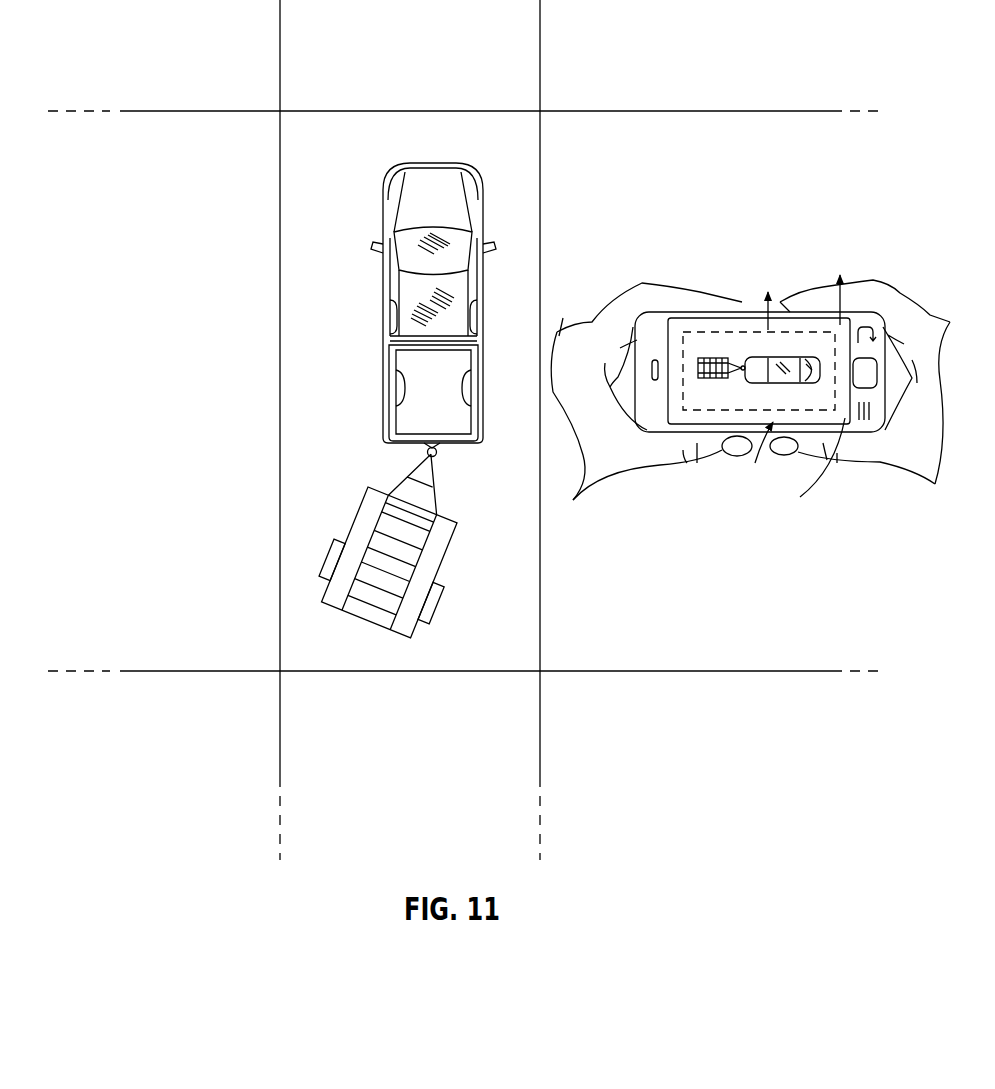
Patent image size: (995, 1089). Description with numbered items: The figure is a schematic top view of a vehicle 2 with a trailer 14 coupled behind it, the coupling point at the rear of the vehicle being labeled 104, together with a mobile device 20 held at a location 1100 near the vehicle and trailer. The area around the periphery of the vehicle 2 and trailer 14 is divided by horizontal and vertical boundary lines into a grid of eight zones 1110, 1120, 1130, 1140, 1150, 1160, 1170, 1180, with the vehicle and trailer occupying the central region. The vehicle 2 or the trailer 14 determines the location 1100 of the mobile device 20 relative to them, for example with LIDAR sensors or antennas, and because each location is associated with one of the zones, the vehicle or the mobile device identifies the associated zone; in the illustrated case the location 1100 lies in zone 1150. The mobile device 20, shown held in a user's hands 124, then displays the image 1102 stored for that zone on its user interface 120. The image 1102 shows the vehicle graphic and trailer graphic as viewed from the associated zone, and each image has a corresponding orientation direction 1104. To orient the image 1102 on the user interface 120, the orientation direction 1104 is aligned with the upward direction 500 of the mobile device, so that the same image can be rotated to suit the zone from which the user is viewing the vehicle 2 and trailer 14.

The vehicle 2 is at (455, 185).
The trailer 14 is at (368, 517).
The hitch ball / coupler 104 is at (446, 456).
The mobile device 20 is at (652, 312).
The user hands 124 is at (627, 305).
The user interface 120 is at (815, 476).
The upward direction 500 is at (847, 302).
The location 1100 is at (645, 214).
The image 1102 is at (757, 459).
The orientation direction 1104 is at (762, 302).
The zone 1110 is at (232, 65).
The zone 1120 is at (440, 65).
The zone 1130 is at (737, 65).
The zone 1140 is at (242, 423).
The zone 1150 is at (734, 177).
The zone 1160 is at (232, 746).
The zone 1170 is at (440, 746).
The zone 1180 is at (737, 746).